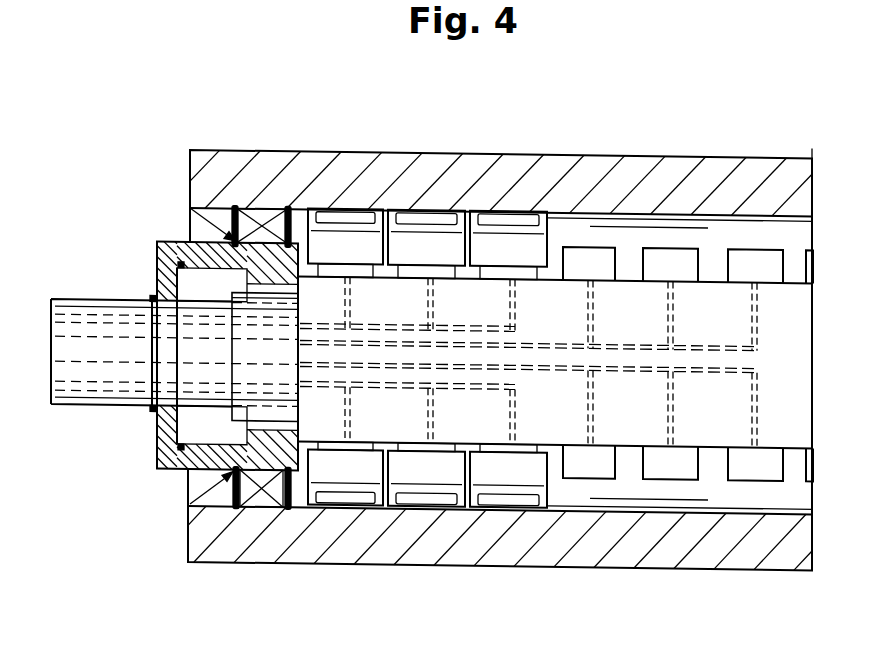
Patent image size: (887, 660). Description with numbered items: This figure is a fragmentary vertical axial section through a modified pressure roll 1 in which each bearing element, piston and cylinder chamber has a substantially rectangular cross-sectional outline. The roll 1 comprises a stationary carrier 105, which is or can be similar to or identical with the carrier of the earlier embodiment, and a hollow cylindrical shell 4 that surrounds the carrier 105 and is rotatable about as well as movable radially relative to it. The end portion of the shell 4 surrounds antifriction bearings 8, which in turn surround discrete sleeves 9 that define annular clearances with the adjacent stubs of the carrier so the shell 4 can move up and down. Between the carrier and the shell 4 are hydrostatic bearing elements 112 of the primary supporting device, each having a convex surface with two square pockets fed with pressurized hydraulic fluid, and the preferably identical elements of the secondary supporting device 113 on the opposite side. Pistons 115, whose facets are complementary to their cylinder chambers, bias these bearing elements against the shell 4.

The pressure roll 1 is at (588, 150).
The hollow cylindrical shell 4 is at (668, 177).
The antifriction bearings 8 is at (263, 217).
The sleeves 9 is at (213, 250).
The carrier 105 is at (793, 424).
The hydrostatic bearing elements 112 is at (366, 247).
The secondary supporting device 113 is at (340, 462).
The pistons 115 is at (748, 254).